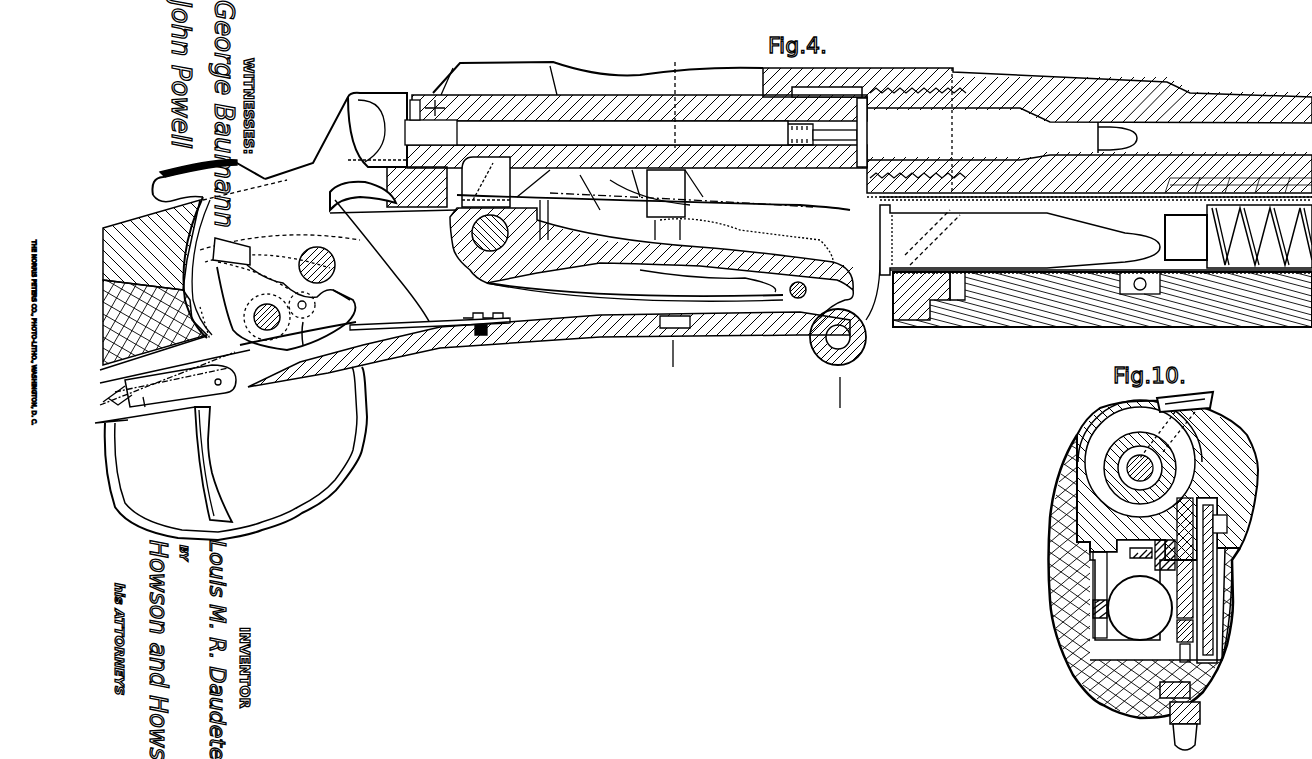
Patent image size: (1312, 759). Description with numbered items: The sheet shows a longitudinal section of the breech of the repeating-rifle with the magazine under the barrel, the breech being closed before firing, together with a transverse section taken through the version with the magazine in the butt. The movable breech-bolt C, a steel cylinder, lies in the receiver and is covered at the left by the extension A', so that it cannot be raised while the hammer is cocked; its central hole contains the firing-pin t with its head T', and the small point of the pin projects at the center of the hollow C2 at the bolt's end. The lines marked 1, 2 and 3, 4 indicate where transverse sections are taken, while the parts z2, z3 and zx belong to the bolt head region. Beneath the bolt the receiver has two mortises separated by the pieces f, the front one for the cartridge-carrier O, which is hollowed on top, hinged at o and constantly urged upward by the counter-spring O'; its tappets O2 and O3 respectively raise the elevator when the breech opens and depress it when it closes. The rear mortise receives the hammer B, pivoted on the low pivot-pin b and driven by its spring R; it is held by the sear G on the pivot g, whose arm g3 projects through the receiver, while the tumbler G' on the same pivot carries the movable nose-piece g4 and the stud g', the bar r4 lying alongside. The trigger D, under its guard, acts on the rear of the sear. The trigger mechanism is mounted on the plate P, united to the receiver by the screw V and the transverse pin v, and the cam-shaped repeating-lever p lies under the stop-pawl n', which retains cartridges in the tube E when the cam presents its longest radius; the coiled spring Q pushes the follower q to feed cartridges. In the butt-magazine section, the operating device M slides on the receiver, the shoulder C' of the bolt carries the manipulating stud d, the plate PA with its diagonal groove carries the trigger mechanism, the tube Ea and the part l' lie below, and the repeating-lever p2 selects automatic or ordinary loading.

In FIG. 4, the extension A' is at (598, 78).
In FIG. 4, the breech-bolt C is at (980, 132).
In FIG. 10, the breech-bolt C is at (1140, 458).
In FIG. 4, the section line 1 2 1 is at (838, 87).
In FIG. 4, the firing-pin t is at (637, 131).
In FIG. 4, the hollow C2 is at (870, 132).
In FIG. 4, the bolt head T' is at (377, 130).
In FIG. 4, the bolt lug z3 is at (432, 98).
In FIG. 4, the bolt pin z2 is at (412, 98).
In FIG. 4, the bolt cross pin zx is at (435, 100).
In FIG. 4, the section line 3 4 3 is at (671, 95).
In FIG. 4, the pieces f is at (420, 207).
In FIG. 4, the hammer B is at (291, 218).
In FIG. 10, the hammer B is at (1120, 520).
In FIG. 4, the sear G is at (280, 302).
In FIG. 10, the sear G is at (1176, 558).
In FIG. 4, the pivot g is at (266, 316).
In FIG. 4, the stud g' is at (319, 299).
In FIG. 4, the pivot-pin b is at (324, 262).
In FIG. 4, the arm g3 is at (218, 268).
In FIG. 4, the nose-piece g4 is at (360, 318).
In FIG. 4, the spring bar r4 is at (430, 315).
In FIG. 4, the tumbler G' is at (300, 362).
In FIG. 4, the plate P is at (549, 343).
In FIG. 4, the trigger D is at (236, 453).
In FIG. 4, the tappet O2 is at (486, 182).
In FIG. 4, the tappet O3 is at (610, 205).
In FIG. 4, the cartridge-carrier O is at (651, 232).
In FIG. 4, the hinge o is at (478, 243).
In FIG. 4, the counter-spring O' is at (635, 285).
In FIG. 4, the spring-catch n' is at (821, 300).
In FIG. 10, the spring-catch n' is at (1201, 686).
In FIG. 4, the repeating-lever p is at (856, 352).
In FIG. 4, the section line 3 4 is at (674, 362).
In FIG. 4, the section line 1 2 is at (845, 397).
In FIG. 4, the tube E is at (1096, 236).
In FIG. 4, the follower q is at (1186, 237).
In FIG. 4, the coiled spring Q is at (1259, 236).
In FIG. 4, the transverse pin v is at (918, 322).
In FIG. 10, the operating device M is at (1235, 445).
In FIG. 10, the shoulder C' is at (1167, 435).
In FIG. 10, the manipulating stud d is at (1213, 397).
In FIG. 10, the spring R is at (1132, 590).
In FIG. 10, the tube Ea is at (1140, 608).
In FIG. 10, the latch l' is at (1189, 624).
In FIG. 10, the plate PA is at (1217, 560).
In FIG. 10, the screw V is at (1230, 622).
In FIG. 10, the repeating-lever p2 is at (1200, 712).